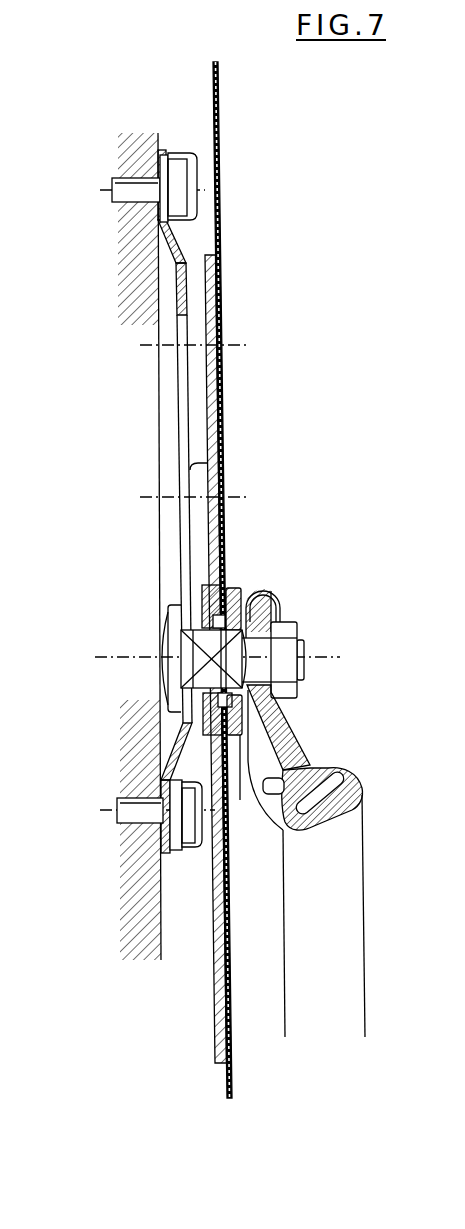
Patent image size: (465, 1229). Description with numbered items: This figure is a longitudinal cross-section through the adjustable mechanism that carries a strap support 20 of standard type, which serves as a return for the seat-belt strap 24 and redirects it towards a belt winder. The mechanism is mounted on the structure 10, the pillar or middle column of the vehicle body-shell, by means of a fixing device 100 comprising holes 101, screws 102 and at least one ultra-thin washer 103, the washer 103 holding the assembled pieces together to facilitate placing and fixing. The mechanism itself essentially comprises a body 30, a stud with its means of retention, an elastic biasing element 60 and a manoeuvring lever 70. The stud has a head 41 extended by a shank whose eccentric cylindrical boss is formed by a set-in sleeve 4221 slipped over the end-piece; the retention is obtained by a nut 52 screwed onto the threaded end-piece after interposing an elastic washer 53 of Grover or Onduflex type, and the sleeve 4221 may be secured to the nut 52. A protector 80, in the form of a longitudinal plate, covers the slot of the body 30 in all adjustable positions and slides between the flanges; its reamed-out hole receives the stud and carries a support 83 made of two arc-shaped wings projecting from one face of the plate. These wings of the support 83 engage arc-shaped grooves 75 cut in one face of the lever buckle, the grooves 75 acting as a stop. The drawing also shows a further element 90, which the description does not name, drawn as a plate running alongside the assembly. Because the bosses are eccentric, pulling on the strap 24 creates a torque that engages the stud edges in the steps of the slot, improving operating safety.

The fixing device 100 is at (131, 437).
The holes 101 is at (123, 183).
The washer 103 is at (160, 157).
The screws 102 is at (58, 66).
The glass plate 90 is at (216, 106).
The structure 10 is at (137, 239).
The body 30 is at (177, 308).
The protector 80 is at (205, 392).
The manoeuvring lever 70 is at (229, 588).
The washer 53 is at (246, 594).
The set-in sleeve 4221 is at (271, 598).
The head 41 is at (173, 618).
The nut 52 is at (288, 627).
The elastic biasing element 60 is at (193, 652).
The support 83 is at (238, 713).
The strap support 20 is at (298, 746).
The grooves 75 is at (236, 735).
The strap 24 is at (358, 868).